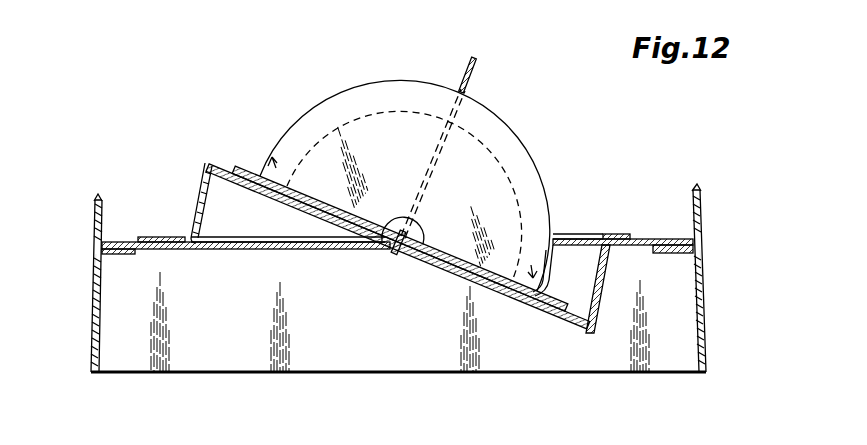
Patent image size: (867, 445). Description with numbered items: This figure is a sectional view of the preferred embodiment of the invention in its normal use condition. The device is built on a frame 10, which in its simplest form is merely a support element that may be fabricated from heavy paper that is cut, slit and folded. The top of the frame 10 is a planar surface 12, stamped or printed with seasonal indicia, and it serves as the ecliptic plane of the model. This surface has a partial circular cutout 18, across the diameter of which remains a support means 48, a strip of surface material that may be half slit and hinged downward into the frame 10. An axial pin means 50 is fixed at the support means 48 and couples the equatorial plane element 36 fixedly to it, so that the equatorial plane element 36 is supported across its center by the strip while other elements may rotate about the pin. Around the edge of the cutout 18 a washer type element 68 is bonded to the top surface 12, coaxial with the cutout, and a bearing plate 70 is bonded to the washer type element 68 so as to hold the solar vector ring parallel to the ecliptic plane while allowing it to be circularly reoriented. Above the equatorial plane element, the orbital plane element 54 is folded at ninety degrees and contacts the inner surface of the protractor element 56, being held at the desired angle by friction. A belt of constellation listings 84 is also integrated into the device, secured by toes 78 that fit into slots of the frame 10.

The frame 10 is at (186, 372).
The planar surface 12 is at (700, 237).
The partial circular cutout 18 is at (212, 250).
The equatorial plane element 36 is at (238, 163).
The support means 48 is at (207, 212).
The axial pin means 50 is at (400, 259).
The orbital plane element 54 is at (528, 166).
The protractor element 56 is at (477, 64).
The washer type element 68 is at (606, 248).
The bearing plate 70 is at (172, 237).
The toes 78 is at (92, 268).
The belt of constellation listings 84 is at (103, 206).